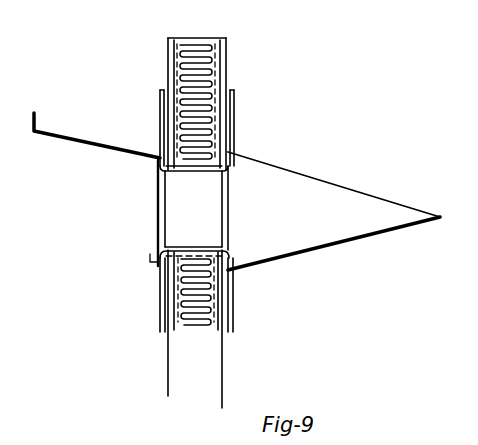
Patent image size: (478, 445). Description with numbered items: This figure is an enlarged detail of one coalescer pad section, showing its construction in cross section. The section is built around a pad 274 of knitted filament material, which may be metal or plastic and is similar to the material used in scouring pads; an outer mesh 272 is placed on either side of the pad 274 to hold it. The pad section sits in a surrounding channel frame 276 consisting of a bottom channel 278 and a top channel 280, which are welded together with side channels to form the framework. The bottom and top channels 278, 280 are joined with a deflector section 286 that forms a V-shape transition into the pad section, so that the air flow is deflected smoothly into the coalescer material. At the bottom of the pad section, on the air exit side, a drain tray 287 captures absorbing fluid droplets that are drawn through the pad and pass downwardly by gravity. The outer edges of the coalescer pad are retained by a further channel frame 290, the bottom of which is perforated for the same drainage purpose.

The outer mesh 272 is at (168, 58).
The pad of knitted filament material 274 is at (210, 108).
The channel frame 276 is at (170, 218).
The bottom channel 278 is at (156, 166).
The top channel 280 is at (150, 262).
The deflector section 286 is at (376, 197).
The drain tray 287 is at (54, 131).
The channel frame 290 is at (165, 128).